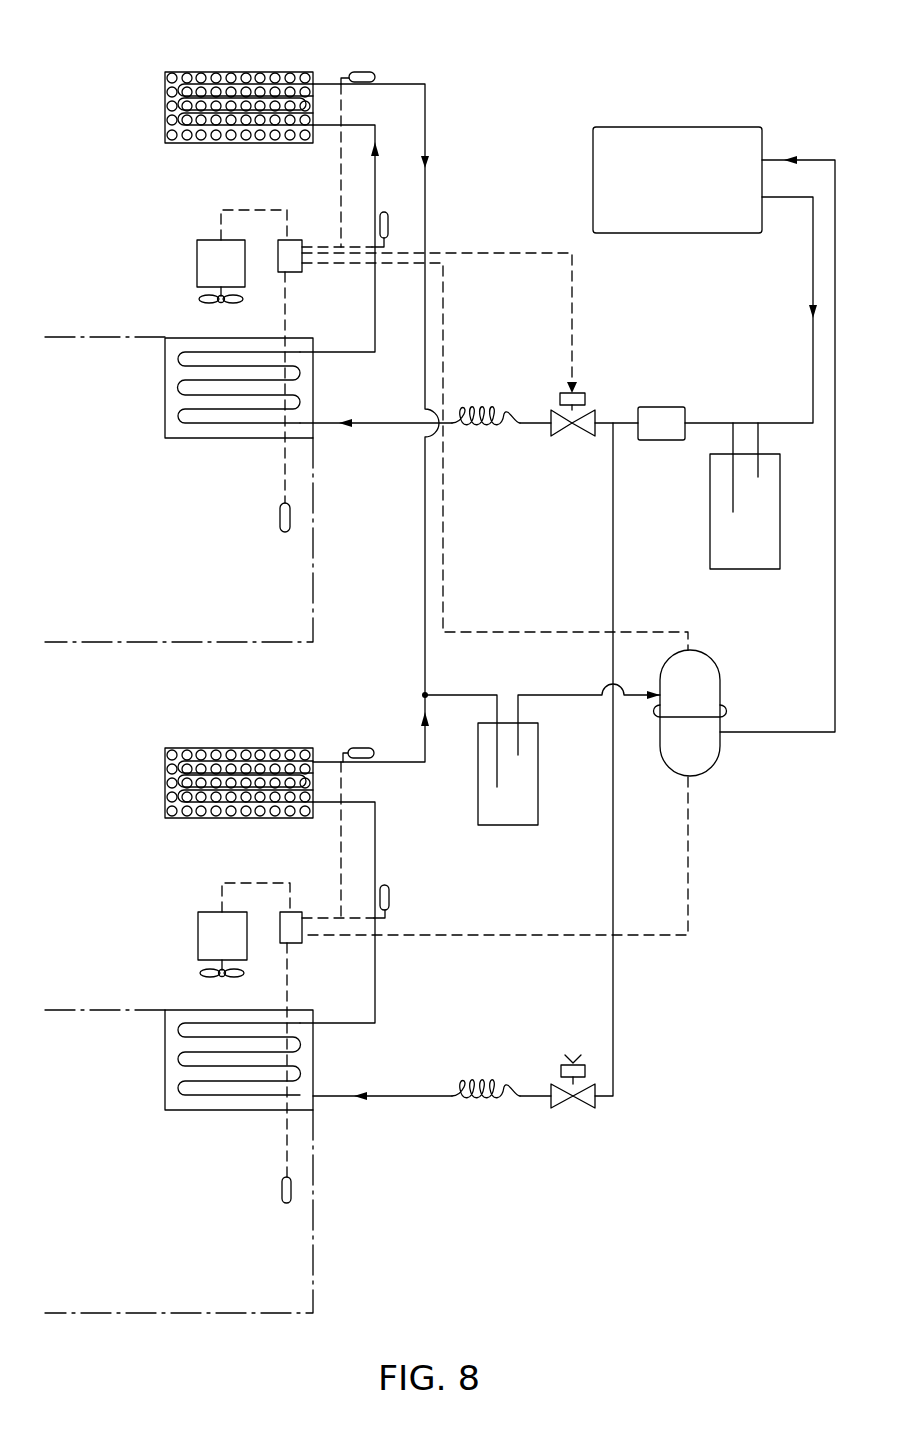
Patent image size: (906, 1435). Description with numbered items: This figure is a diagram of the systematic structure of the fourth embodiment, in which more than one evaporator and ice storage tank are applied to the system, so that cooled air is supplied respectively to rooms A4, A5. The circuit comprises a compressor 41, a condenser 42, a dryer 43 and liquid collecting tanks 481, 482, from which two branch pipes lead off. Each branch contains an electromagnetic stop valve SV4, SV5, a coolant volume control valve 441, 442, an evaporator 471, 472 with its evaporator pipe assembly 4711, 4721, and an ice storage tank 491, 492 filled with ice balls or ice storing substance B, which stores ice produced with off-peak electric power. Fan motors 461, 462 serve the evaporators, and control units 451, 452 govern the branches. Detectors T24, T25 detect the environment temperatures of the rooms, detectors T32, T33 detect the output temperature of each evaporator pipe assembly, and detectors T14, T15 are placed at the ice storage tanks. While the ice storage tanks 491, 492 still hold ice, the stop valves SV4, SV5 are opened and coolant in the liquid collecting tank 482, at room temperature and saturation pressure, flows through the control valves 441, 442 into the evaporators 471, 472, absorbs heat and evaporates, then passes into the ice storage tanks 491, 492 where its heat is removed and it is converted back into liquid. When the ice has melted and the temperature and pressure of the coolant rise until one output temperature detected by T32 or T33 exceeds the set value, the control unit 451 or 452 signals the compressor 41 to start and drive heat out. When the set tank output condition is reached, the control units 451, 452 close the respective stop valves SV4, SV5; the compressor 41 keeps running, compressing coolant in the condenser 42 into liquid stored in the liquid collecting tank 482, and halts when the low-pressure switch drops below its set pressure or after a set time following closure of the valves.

The compressor 41 is at (711, 776).
The condenser 42 is at (680, 127).
The dryer 43 is at (666, 407).
The coolant volume control valve 441 is at (482, 405).
The coolant volume control valve 442 is at (488, 1078).
The control unit 451 is at (298, 240).
The control unit 452 is at (298, 912).
The fan motor 461 is at (198, 258).
The fan motor 462 is at (198, 935).
The evaporator 471 is at (175, 422).
The evaporator pipe assembly 4711 is at (178, 388).
The evaporator 472 is at (182, 1097).
The evaporator pipe assembly 4721 is at (178, 1059).
The liquid collecting tank 481 is at (517, 827).
The liquid collecting tank 482 is at (758, 570).
The ice storage tank 491 is at (228, 72).
The ice storage tank 492 is at (228, 748).
The electromagnetic stop valve SV4 is at (568, 434).
The electromagnetic stop valve SV5 is at (572, 1101).
The detector T14 is at (378, 74).
The detector T15 is at (358, 746).
The detector T24 is at (285, 535).
The detector T25 is at (283, 1205).
The detector T32 is at (422, 213).
The detector T33 is at (392, 895).
The room A4 is at (179, 489).
The room A5 is at (179, 1161).
The ice storing substance B is at (168, 93).